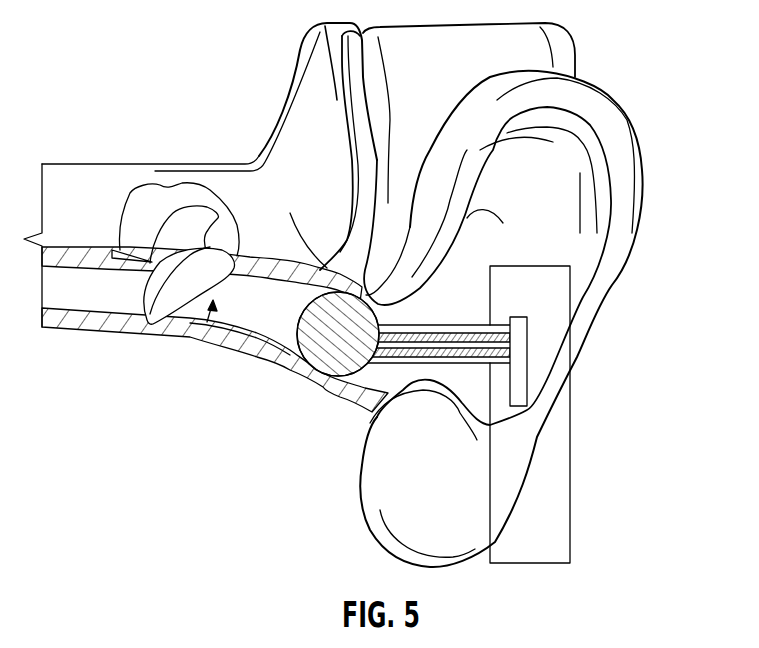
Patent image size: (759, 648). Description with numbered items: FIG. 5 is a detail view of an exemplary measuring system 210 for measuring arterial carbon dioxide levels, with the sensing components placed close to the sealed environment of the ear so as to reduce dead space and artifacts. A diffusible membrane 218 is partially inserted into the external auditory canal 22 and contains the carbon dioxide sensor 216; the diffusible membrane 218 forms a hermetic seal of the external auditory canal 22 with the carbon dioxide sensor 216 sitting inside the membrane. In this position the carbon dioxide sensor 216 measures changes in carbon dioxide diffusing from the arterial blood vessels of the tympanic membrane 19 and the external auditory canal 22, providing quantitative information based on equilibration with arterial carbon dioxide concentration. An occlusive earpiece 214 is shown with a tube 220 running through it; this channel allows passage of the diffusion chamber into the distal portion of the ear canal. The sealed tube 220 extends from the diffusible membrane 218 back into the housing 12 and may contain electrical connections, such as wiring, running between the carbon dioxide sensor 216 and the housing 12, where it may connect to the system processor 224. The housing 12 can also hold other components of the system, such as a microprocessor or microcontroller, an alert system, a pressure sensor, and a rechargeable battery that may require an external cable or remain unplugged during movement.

The measuring system 210 is at (483, 302).
The housing 12 is at (555, 318).
The occlusive earpiece 214 is at (450, 326).
The carbon dioxide sensor 216 is at (322, 382).
The diffusible membrane 218 is at (307, 308).
The tube 220 is at (447, 363).
The system processor 224 is at (528, 363).
The tympanic membrane 19 is at (158, 336).
The external auditory canal 22 is at (197, 337).